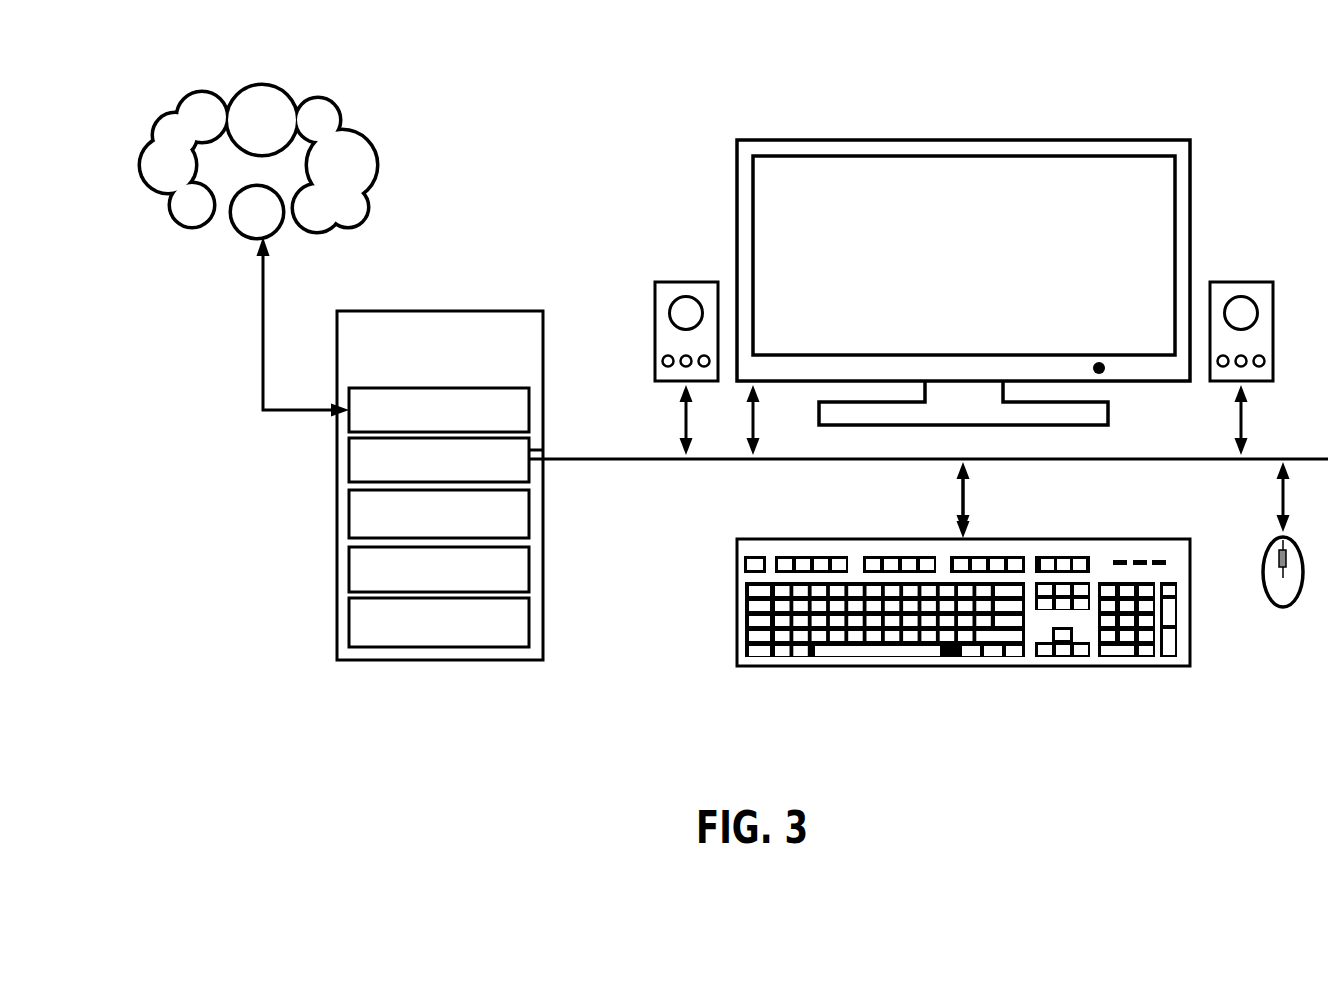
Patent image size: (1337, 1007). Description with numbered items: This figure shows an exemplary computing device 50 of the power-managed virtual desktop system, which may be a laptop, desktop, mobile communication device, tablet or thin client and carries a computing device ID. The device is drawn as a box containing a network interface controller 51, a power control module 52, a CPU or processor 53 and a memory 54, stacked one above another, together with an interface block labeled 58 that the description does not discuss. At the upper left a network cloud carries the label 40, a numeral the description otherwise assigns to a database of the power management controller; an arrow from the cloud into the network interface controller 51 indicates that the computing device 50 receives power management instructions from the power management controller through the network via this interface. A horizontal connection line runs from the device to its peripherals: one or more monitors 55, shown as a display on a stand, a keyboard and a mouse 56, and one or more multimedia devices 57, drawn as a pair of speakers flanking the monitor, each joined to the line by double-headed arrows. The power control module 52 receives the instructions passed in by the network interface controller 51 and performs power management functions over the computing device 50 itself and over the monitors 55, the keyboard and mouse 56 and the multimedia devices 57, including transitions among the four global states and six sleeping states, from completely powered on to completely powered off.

The database 40 is at (377, 155).
The computing device 50 is at (450, 311).
The network interface controller 51 is at (535, 389).
The USB interface 58 is at (535, 450).
The power control module 52 is at (533, 513).
The CPU 53 is at (533, 568).
The memory 54 is at (533, 622).
The monitor 55 is at (1190, 215).
The keyboard and mouse 56 is at (1140, 539).
The multimedia device 57 is at (1273, 282).